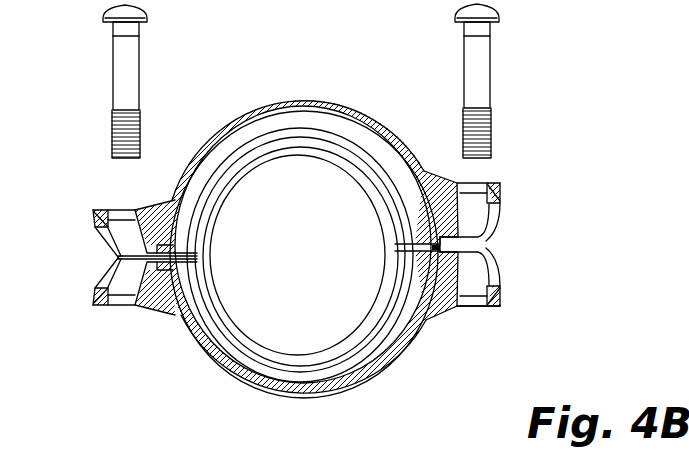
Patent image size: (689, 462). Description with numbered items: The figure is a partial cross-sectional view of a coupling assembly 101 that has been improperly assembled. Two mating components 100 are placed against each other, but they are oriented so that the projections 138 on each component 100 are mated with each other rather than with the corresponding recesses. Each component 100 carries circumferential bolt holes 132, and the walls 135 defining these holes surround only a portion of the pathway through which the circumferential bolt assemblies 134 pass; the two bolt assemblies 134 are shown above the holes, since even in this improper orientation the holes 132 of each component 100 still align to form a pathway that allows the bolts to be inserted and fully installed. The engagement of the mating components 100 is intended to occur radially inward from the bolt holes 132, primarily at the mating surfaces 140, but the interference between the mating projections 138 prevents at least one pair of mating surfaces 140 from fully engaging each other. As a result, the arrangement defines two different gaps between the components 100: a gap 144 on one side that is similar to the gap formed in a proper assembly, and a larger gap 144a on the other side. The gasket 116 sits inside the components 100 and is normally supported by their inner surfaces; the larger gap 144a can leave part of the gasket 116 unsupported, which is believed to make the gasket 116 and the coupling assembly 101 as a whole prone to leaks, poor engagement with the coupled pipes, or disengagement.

The component 100 is at (237, 133).
The coupling assembly 101 is at (314, 215).
The gasket 116 is at (272, 156).
The circumferential bolt hole 132 is at (125, 203).
The circumferential bolt assembly 134 is at (103, 9).
The wall 135 is at (485, 308).
The projection 138 is at (420, 250).
The mating surface 140 is at (512, 226).
The gap 144 is at (85, 233).
The gap 144a is at (510, 203).